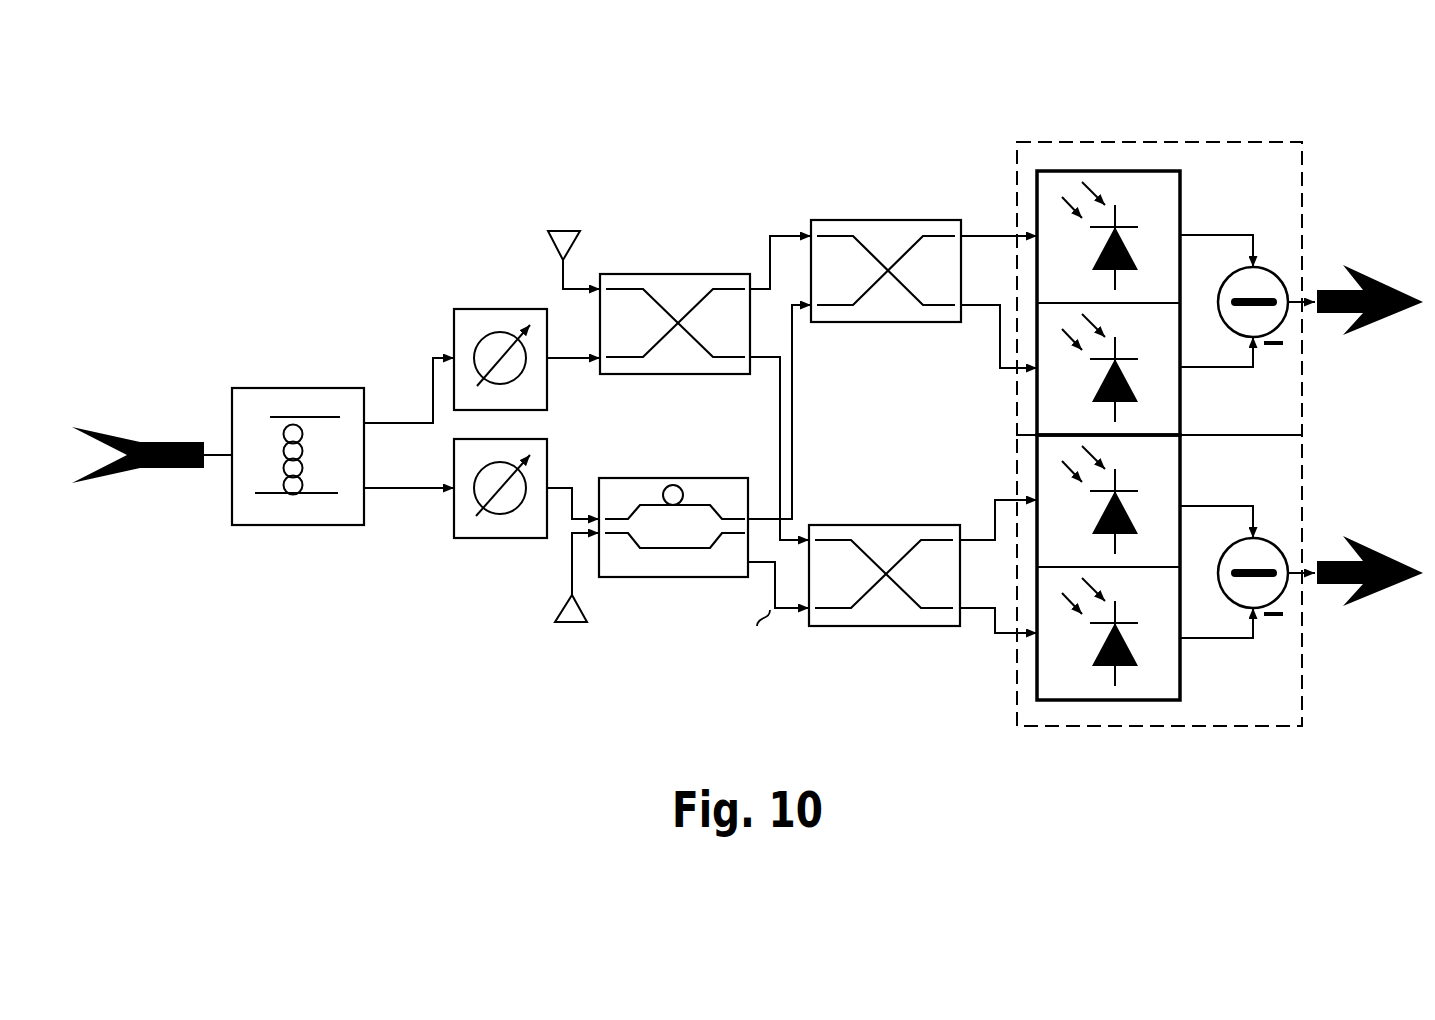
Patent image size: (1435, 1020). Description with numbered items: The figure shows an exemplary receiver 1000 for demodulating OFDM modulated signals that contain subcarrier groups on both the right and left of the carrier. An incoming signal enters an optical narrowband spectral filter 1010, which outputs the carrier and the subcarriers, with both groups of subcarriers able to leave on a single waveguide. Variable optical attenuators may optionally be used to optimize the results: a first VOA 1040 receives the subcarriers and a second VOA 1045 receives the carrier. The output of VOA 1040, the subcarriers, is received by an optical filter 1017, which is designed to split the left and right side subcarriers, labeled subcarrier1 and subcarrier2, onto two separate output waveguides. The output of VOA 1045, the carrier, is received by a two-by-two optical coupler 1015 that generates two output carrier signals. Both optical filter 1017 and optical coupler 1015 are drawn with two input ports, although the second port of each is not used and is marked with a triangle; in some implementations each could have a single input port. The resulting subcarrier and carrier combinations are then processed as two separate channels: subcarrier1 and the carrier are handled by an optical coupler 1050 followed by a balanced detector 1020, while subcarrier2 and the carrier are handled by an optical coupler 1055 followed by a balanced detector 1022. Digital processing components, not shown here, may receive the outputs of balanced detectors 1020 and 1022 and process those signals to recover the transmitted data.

The receiver 1000 is at (248, 303).
The optical narrowband spectral filter 1010 is at (361, 388).
The second VOA 1045 is at (500, 293).
The first VOA 1040 is at (510, 540).
The 2x2 optical coupler 1015 is at (679, 274).
The optical filter 1017 is at (669, 478).
The optical coupler 1050 is at (918, 220).
The optical coupler 1055 is at (903, 525).
The balanced detector 1020 is at (1310, 128).
The balanced detector 1022 is at (1285, 727).